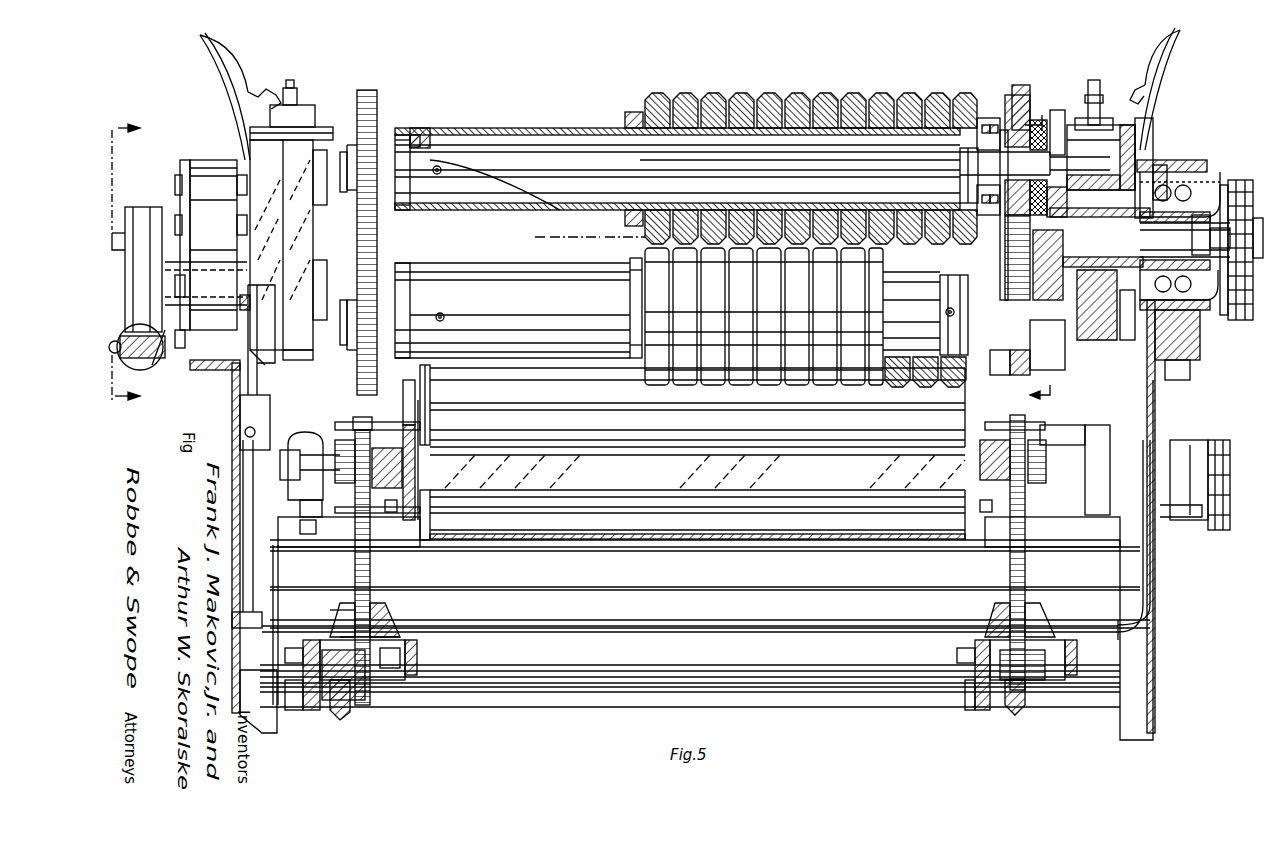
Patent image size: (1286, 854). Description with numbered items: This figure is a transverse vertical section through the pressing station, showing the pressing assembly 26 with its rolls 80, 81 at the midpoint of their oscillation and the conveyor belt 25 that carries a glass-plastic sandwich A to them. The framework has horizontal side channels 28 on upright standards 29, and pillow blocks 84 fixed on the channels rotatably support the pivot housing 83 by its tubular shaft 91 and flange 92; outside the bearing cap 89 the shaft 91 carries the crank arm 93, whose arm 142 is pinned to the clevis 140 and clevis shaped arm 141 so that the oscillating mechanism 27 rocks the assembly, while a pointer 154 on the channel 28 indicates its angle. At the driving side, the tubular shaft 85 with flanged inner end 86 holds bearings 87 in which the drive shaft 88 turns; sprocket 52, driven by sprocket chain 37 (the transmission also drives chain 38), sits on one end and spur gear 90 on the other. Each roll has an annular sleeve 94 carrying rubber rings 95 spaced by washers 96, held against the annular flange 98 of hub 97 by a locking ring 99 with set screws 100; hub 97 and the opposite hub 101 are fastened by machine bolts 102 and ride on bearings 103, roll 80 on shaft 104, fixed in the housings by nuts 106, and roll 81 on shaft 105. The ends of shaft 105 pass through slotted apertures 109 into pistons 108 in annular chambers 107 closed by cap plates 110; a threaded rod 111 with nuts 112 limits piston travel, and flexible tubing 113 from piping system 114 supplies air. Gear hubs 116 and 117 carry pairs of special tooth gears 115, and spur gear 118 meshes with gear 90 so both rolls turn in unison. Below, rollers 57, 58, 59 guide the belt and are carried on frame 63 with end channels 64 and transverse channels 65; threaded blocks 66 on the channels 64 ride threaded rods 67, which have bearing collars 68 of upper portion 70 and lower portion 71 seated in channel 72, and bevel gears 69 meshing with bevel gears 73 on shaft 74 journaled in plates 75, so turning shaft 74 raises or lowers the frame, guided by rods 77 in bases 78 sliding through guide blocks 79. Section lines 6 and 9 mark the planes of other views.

The section line 6- 6 is at (126, 266).
The section line 9- 9 is at (1040, 244).
The conveyor belt 25 is at (772, 448).
The pressing assembly 26 is at (440, 90).
The oscillating mechanism 27 is at (152, 372).
The side channels 28 is at (232, 398).
The standards 29 is at (1135, 645).
The sprocket chain 37 is at (1250, 300).
The sprocket chain 38 is at (1226, 532).
The sprocket 52 is at (1258, 218).
The roller 57 is at (597, 440).
The roller 58 is at (420, 370).
The roller 59 is at (505, 515).
The frame 63 is at (390, 412).
The end channels 64 is at (390, 512).
The transverse channels 65 is at (470, 470).
The threaded blocks 66 is at (340, 462).
The threaded rods 67 is at (356, 568).
The bearing collars 68 is at (345, 622).
The bevel gears 69 is at (385, 670).
The upper collar portion 70 is at (400, 622).
The lower collar portion 71 is at (417, 652).
The beam or channel 72 is at (420, 658).
The bevel gears 73 is at (343, 720).
The shaft 74 is at (465, 690).
The plates 75 is at (312, 712).
The rods 77 is at (372, 570).
The bases 78 is at (392, 612).
The guide blocks 79 is at (325, 445).
The roll 80 is at (502, 295).
The roll 81 is at (552, 125).
The pivot housing 83 is at (305, 330).
The pillow blocks 84 is at (210, 185).
The shaft 85 is at (1160, 168).
The flanged inner end 86 is at (1028, 215).
The bearings 87 is at (1205, 215).
The drive shaft 88 is at (1200, 320).
The bearing cap 89 is at (178, 190).
The spur gear 90 is at (1100, 320).
The tubular shaft 91 is at (180, 203).
The flange 92 is at (315, 248).
The crank arm 93 is at (135, 215).
The annular sleeve 94 is at (582, 128).
The rubber rings 95 is at (655, 98).
The washers 96 is at (706, 98).
The hub 97 is at (966, 95).
The annular flange 98 is at (1010, 95).
The locking ring 99 is at (630, 124).
The set screws 100 is at (633, 112).
The hub 101 is at (403, 130).
The machine bolts 102 is at (444, 136).
The bearings 103 is at (418, 140).
The shaft 104 is at (905, 315).
The shaft 105 is at (513, 165).
The nuts 106 is at (258, 335).
The annular chamber 107 is at (1150, 118).
The piston 108 is at (1112, 110).
The slotted aperture 109 is at (1058, 110).
The cap plate 110 is at (310, 110).
The threaded rod 111 is at (292, 85).
The nuts 112 is at (280, 100).
The flexible tubing 113 is at (205, 75).
The piping system 114 is at (250, 578).
The special tooth gears 115 is at (367, 95).
The gear hubs 116 is at (340, 150).
The gear hub 117 is at (1010, 358).
The spur gear 118 is at (1055, 360).
The clevis 140 is at (183, 295).
The clevis shaped arm 141 is at (178, 330).
The arm 142 is at (158, 360).
The pointer 154 is at (120, 255).
The glass-plastic sandwich A is at (560, 232).